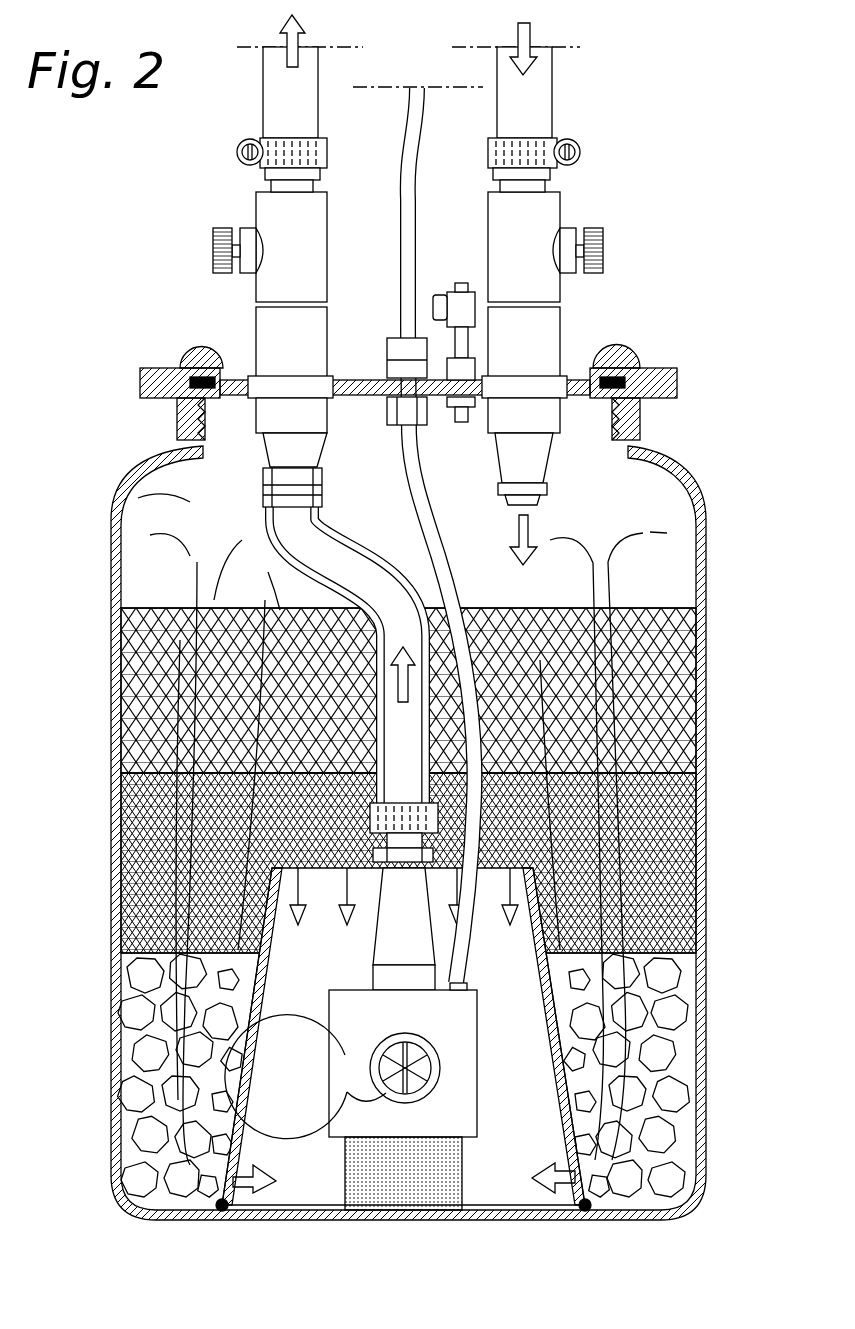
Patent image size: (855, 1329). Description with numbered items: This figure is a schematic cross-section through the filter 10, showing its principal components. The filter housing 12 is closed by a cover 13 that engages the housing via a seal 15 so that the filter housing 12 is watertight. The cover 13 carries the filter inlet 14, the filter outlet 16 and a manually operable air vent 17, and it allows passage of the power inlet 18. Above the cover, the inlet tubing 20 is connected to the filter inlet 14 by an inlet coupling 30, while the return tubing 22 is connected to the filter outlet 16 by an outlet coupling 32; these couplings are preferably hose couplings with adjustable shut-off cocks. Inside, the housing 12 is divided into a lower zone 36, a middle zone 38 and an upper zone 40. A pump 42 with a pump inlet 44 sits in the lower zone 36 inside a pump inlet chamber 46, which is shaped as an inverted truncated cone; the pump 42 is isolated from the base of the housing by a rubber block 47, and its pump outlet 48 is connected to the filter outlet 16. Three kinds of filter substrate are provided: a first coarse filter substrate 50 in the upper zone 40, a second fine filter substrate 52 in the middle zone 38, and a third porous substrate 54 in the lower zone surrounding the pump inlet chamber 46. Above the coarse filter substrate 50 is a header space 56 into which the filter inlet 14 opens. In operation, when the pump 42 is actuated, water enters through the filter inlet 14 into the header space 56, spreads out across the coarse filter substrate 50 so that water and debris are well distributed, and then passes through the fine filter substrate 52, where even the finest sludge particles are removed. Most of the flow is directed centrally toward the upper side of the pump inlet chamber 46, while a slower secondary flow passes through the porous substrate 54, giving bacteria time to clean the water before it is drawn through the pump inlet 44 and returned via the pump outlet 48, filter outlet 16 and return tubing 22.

The filter 10 is at (150, 242).
The filter housing 12 is at (111, 703).
The cover 13 is at (658, 393).
The filter inlet 14 is at (548, 347).
The seal 15 is at (642, 365).
The filter outlet 16 is at (270, 340).
The manually operable air vent 17 is at (458, 300).
The power inlet 18 is at (413, 152).
The inlet tubing 20 is at (535, 100).
The return tubing 22 is at (275, 105).
The inlet coupling 30 is at (550, 210).
The outlet coupling 32 is at (268, 215).
The lower zone 36 is at (706, 1112).
The middle zone 38 is at (706, 906).
The upper zone 40 is at (706, 731).
The pump 42 is at (385, 1128).
The pump inlet 44 is at (395, 1087).
The pump inlet chamber 46 is at (232, 1170).
The rubber block 47 is at (428, 1180).
The pump outlet 48 is at (383, 782).
The coarse filter substrate 50 is at (665, 668).
The fine filter substrate 52 is at (660, 857).
The porous substrate 54 is at (653, 1032).
The header space 56 is at (195, 503).